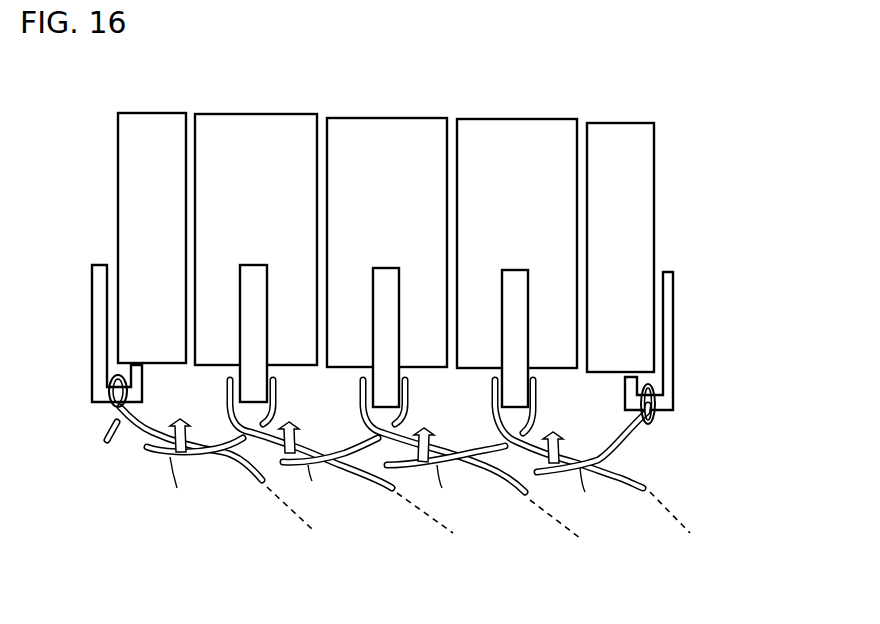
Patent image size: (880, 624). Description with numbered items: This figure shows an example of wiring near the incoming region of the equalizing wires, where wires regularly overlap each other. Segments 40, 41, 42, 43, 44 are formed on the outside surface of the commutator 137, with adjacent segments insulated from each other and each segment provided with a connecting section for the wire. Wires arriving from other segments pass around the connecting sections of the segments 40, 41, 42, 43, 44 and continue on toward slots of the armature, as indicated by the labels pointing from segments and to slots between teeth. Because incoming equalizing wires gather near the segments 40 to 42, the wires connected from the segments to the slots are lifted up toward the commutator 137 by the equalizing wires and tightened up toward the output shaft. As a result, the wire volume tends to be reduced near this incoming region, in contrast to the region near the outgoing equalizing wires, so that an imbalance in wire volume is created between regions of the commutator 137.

The segment 40 is at (152, 221).
The segment 41 is at (256, 222).
The segment 42 is at (387, 223).
The segment 43 is at (517, 224).
The segment 44 is at (620, 226).
The commutator 137 is at (690, 140).